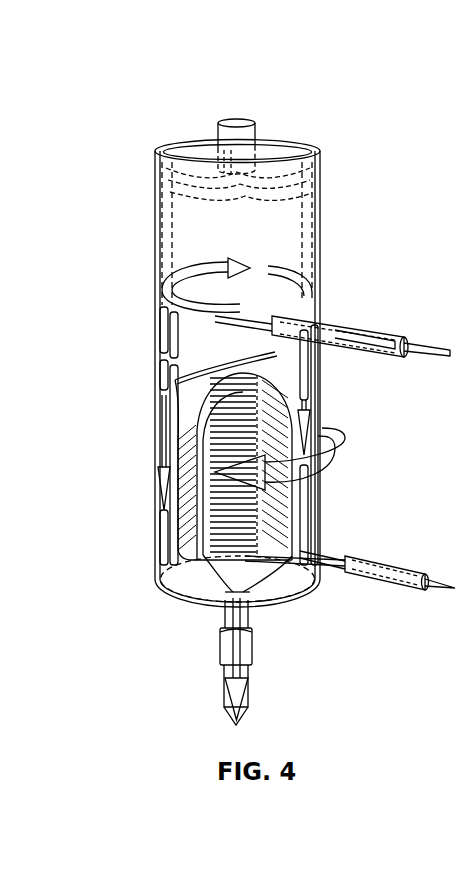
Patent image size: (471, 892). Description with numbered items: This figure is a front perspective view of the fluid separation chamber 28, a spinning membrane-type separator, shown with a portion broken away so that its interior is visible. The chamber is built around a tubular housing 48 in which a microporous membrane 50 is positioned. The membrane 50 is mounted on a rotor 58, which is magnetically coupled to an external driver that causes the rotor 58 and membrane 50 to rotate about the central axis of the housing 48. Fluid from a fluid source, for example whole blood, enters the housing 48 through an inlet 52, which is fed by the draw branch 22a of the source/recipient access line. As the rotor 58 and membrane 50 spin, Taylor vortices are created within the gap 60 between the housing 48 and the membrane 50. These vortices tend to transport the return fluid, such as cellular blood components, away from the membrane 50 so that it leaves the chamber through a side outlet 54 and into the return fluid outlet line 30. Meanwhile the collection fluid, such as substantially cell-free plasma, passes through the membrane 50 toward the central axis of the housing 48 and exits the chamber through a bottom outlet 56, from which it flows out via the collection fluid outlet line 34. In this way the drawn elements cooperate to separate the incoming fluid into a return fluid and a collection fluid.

The fluid separation chamber 28 is at (312, 131).
The tubular housing 48 is at (160, 218).
The rotor 58 is at (310, 201).
The gap 60 is at (305, 214).
The draw branch 22a is at (330, 318).
The inlet 52 is at (200, 346).
The microporous membrane 50 is at (192, 412).
The side outlet 54 is at (350, 560).
The return fluid outlet line 30 is at (395, 592).
The bottom outlet 56 is at (228, 650).
The collection fluid outlet line 34 is at (250, 692).